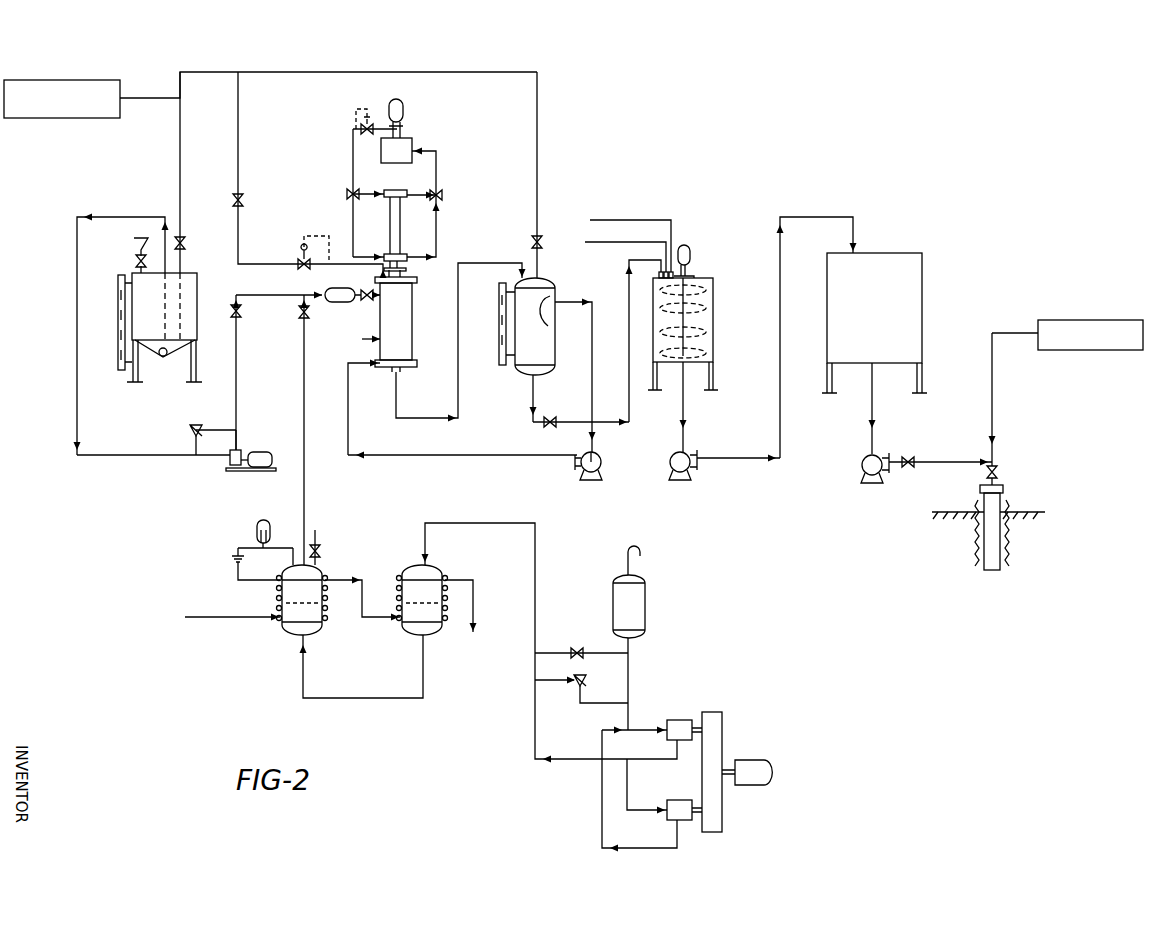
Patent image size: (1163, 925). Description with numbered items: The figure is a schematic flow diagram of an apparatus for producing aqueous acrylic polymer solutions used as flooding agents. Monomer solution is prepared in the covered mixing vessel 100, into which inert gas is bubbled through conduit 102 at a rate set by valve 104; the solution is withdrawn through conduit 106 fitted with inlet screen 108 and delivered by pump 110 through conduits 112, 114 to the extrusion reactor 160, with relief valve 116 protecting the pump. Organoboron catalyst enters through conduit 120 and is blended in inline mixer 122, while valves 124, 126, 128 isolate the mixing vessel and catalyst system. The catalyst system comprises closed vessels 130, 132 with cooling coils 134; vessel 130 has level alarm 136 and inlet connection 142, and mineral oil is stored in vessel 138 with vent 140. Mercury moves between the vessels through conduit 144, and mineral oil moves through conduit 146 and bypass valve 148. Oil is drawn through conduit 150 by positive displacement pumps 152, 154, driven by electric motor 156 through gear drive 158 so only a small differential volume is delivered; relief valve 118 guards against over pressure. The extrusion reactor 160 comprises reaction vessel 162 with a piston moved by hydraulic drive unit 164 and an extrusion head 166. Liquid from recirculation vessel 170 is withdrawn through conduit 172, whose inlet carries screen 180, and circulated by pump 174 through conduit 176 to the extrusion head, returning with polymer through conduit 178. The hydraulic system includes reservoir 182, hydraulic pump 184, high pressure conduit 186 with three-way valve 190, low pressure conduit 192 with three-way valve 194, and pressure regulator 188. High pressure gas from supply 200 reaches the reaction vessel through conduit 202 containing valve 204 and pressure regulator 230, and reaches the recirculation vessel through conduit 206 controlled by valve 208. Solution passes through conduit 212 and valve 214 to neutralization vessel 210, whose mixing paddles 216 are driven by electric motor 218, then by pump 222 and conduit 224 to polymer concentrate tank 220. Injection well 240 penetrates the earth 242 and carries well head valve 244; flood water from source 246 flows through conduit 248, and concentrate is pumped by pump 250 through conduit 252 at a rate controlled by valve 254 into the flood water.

The mixing vessel 100 is at (190, 328).
The conduit 102 is at (180, 263).
The valve 104 is at (186, 242).
The conduit 106 is at (77, 241).
The inlet screen 108 is at (165, 360).
The pump 110 is at (245, 452).
The conduit 112 is at (238, 405).
The conduit 114 is at (247, 294).
The relief valve 116 is at (190, 424).
The relief valve 118 is at (586, 680).
The conduit 120 is at (304, 505).
The inline mixer 122 is at (309, 308).
The valve 124 is at (242, 311).
The valve 126 is at (366, 291).
The valve 128 is at (300, 318).
The vessel 130 is at (290, 637).
The vessel 132 is at (412, 637).
The cooling coils 134 is at (200, 617).
The level alarm 136 is at (256, 527).
The vessel 138 is at (648, 606).
The vent 140 is at (634, 562).
The inlet connection 142 is at (318, 540).
The conduit 144 is at (375, 698).
The conduit 146 is at (475, 522).
The bypass valve 148 is at (577, 648).
The conduit 150 is at (630, 680).
The positive displacement pump 152 is at (678, 718).
The positive displacement pump 154 is at (672, 822).
The electric motor 156 is at (760, 762).
The gear drive 158 is at (724, 730).
The extrusion reactor 160 is at (362, 351).
The reaction vessel 162 is at (400, 331).
The hydraulic drive unit 164 is at (392, 224).
The extrusion head 166 is at (390, 370).
The recirculation vessel 170 is at (545, 282).
The conduit 172 is at (590, 401).
The pump 174 is at (591, 480).
The conduit 176 is at (385, 455).
The conduit 178 is at (402, 418).
The screen 180 is at (548, 326).
The hydraulic fluid reservoir 182 is at (413, 145).
The hydraulic pump 184 is at (404, 112).
The high pressure conduit 186 is at (352, 155).
The pressure regulator 188 is at (368, 118).
The three-way valve 190 is at (347, 198).
The low pressure conduit 192 is at (437, 236).
The three-way valve 194 is at (443, 195).
The high pressure gas supply 200 is at (60, 118).
The conduit 202 is at (240, 222).
The valve 204 is at (245, 199).
The conduit 206 is at (538, 160).
The valve 208 is at (530, 241).
The neutralization vessel 210 is at (715, 305).
The conduit 212 is at (629, 283).
The valve 214 is at (545, 422).
The mixing paddles 216 is at (712, 352).
The electric motor 218 is at (692, 256).
The polymer concentrate tank 220 is at (922, 291).
The pump 222 is at (695, 450).
The conduit 224 is at (782, 440).
The pressure regulator 230 is at (302, 260).
The injection well 240 is at (982, 502).
The earth 242 is at (1030, 512).
The well head valve 244 is at (998, 474).
The flood water source 246 is at (1065, 320).
The conduit 248 is at (1010, 333).
The pump 250 is at (860, 470).
The conduit 252 is at (948, 462).
The valve 254 is at (908, 468).